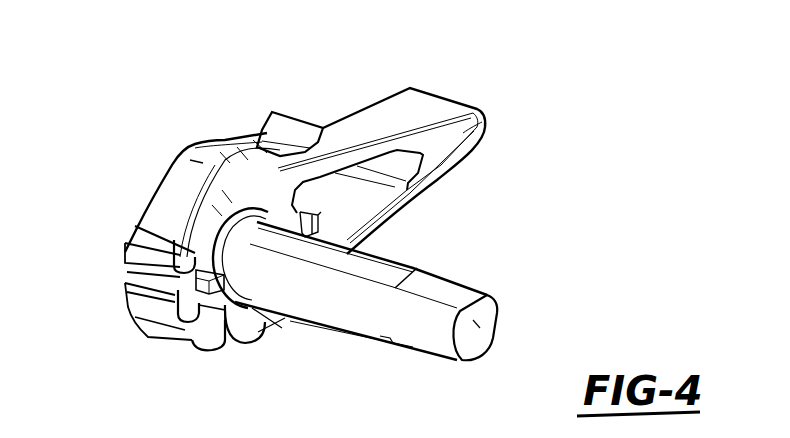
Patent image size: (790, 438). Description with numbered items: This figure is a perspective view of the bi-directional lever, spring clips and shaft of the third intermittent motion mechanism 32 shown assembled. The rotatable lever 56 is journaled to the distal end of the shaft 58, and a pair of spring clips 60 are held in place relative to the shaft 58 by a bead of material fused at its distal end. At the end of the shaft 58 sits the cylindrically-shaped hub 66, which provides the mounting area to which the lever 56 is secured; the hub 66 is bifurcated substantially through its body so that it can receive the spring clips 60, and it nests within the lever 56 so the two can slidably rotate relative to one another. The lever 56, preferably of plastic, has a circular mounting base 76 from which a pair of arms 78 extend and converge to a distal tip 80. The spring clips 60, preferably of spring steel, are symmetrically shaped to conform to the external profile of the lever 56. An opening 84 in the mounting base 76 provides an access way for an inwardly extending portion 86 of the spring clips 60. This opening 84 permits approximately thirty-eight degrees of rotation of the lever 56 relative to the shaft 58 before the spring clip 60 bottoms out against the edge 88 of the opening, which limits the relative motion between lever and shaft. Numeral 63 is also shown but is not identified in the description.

The third intermittent motion mechanism 32 is at (292, 111).
The rotatable lever 56 is at (443, 108).
The shaft 58 is at (477, 325).
The spring clips 60 is at (182, 164).
The rod 63 is at (468, 297).
The cylindrically-shaped hub 66 is at (250, 306).
The circular mounting base 76 is at (252, 196).
The arms 78 is at (372, 112).
The distal tip 80 is at (463, 138).
The opening 84 is at (135, 226).
The inwardly extending portion 86 is at (125, 288).
The edge 88 is at (187, 343).